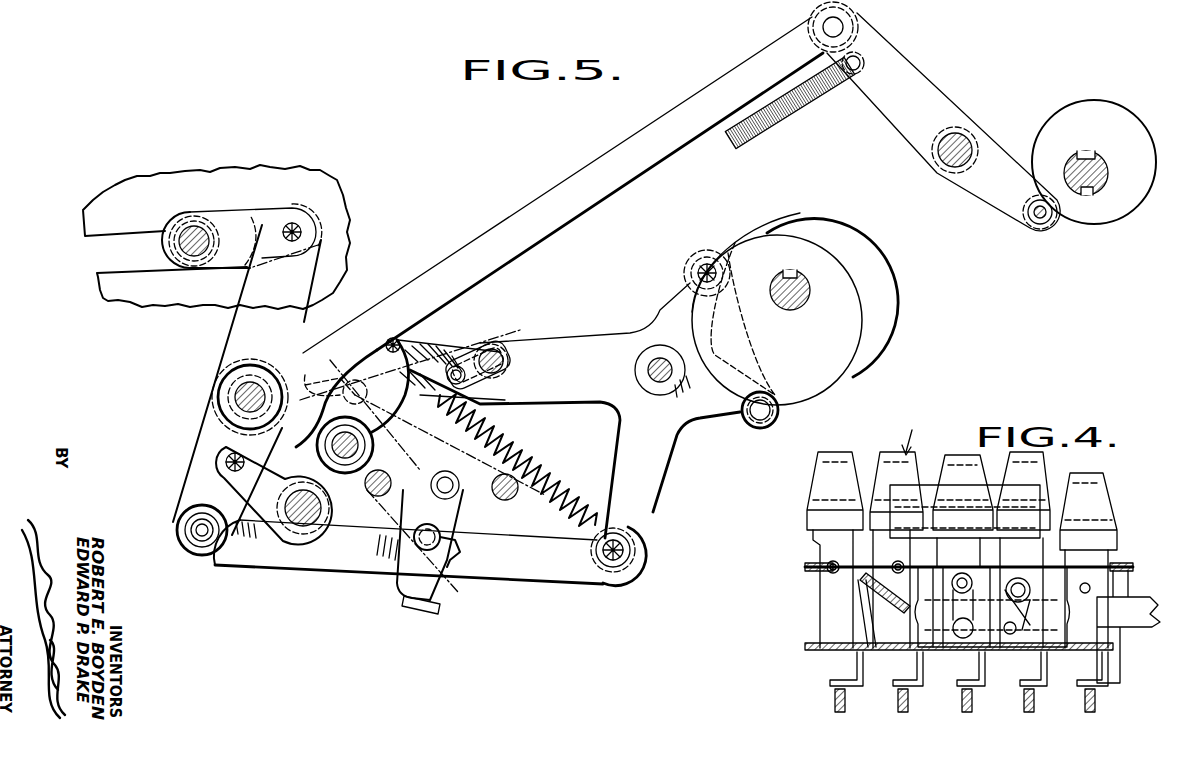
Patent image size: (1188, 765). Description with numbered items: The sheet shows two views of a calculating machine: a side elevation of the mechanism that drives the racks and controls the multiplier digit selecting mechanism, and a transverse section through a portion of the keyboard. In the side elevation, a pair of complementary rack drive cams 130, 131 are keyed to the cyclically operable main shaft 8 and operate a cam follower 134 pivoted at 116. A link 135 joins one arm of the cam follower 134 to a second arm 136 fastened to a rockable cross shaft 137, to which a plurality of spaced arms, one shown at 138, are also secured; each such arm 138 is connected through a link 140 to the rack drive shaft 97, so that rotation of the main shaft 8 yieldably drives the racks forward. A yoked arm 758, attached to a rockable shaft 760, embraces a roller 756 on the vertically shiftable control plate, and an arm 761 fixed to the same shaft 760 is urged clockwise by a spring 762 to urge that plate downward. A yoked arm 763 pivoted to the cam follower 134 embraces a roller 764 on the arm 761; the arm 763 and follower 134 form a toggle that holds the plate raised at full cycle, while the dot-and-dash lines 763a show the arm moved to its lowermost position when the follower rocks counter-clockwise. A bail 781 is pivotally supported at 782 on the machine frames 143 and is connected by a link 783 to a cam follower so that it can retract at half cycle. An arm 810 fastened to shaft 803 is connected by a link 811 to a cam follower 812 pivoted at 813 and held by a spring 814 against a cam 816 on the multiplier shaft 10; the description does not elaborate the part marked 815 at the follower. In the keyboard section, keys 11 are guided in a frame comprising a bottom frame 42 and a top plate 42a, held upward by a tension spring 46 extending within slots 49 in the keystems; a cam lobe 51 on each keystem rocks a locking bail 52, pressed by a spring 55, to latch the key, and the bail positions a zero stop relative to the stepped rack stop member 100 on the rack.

In FIG. 5, the main shaft 8 is at (792, 310).
In FIG. 5, the multiplier shaft 10 is at (1098, 170).
In FIG. 4, the keys 11 is at (909, 434).
In FIG. 4, the bottom frame 42 is at (815, 650).
In FIG. 4, the top plate 42a is at (810, 570).
In FIG. 4, the tension spring 46 is at (820, 562).
In FIG. 4, the slots 49 is at (858, 582).
In FIG. 4, the cam lobe 51 is at (856, 605).
In FIG. 4, the locking bail 52 is at (1118, 577).
In FIG. 4, the spring 55 is at (890, 566).
In FIG. 5, the rack drive shaft 97 is at (178, 242).
In FIG. 4, the rack stop member 100 is at (898, 700).
In FIG. 5, the cam follower pivot 116 is at (655, 382).
In FIG. 5, the rack drive cam 130 is at (758, 236).
In FIG. 5, the rack drive cam 131 is at (876, 240).
In FIG. 5, the cam follower 134 is at (660, 500).
In FIG. 5, the link 135 is at (555, 575).
In FIG. 5, the second arm 136 is at (200, 460).
In FIG. 5, the rockable cross shaft 137 is at (232, 398).
In FIG. 5, the spaced arm 138 is at (232, 366).
In FIG. 5, the link 140 is at (268, 207).
In FIG. 5, the machine frames 143 is at (337, 182).
In FIG. 5, the roller 756 is at (500, 348).
In FIG. 5, the yoked arm 758 is at (472, 345).
In FIG. 5, the rockable shaft 760 is at (322, 440).
In FIG. 5, the arm 761 is at (392, 338).
In FIG. 5, the spring 762 is at (552, 455).
In FIG. 5, the yoked arm 763 is at (425, 352).
In FIG. 5, the yoked arm shifted position 763a is at (410, 480).
In FIG. 5, the roller 764 is at (352, 372).
In FIG. 5, the bail 781 is at (438, 610).
In FIG. 5, the bail pivot 782 is at (418, 505).
In FIG. 5, the link 783 is at (466, 544).
In FIG. 5, the shaft 803 is at (328, 516).
In FIG. 5, the arm 810 is at (236, 508).
In FIG. 5, the link 811 is at (540, 232).
In FIG. 5, the cam follower 812 is at (918, 72).
In FIG. 5, the cam follower pivot 813 is at (965, 140).
In FIG. 5, the spring 814 is at (798, 108).
In FIG. 5, the pin 815 is at (1036, 230).
In FIG. 5, the cam 816 is at (1100, 112).